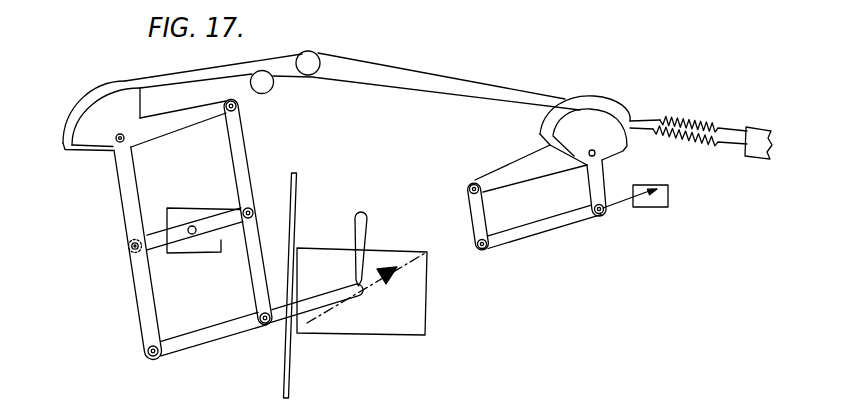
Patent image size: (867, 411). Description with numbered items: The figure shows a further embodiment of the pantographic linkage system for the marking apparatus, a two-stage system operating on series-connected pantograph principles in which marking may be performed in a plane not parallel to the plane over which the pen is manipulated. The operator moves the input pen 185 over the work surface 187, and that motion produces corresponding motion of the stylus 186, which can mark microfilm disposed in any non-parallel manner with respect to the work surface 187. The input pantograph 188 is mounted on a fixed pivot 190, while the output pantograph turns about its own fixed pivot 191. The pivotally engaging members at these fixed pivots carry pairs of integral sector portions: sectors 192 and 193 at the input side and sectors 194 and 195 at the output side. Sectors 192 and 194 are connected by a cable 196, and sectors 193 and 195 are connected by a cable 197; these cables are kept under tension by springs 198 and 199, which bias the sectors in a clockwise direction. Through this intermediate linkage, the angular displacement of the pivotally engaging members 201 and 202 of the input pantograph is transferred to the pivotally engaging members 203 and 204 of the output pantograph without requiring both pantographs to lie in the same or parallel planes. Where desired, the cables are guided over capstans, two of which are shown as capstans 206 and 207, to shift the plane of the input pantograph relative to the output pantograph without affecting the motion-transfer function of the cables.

The input pen 185 is at (370, 223).
The stylus 186 is at (619, 205).
The work surface 187 is at (402, 327).
The input pantograph 188 is at (125, 252).
The fixed pivot 190 is at (117, 143).
The fixed pivot 191 is at (592, 150).
The sector portion 192 is at (63, 148).
The sector portion 193 is at (83, 110).
The sector portion 194 is at (540, 134).
The sector portion 195 is at (550, 145).
The cable 196 is at (458, 79).
The cable 197 is at (465, 98).
The spring 198 is at (712, 123).
The spring 199 is at (700, 146).
The pivotally engaging member 201 is at (125, 215).
The pivotally engaging member 202 is at (195, 125).
The pivotally engaging member 203 is at (592, 187).
The pivotally engaging member 204 is at (488, 173).
The capstan 206 is at (264, 90).
The capstan 207 is at (310, 58).